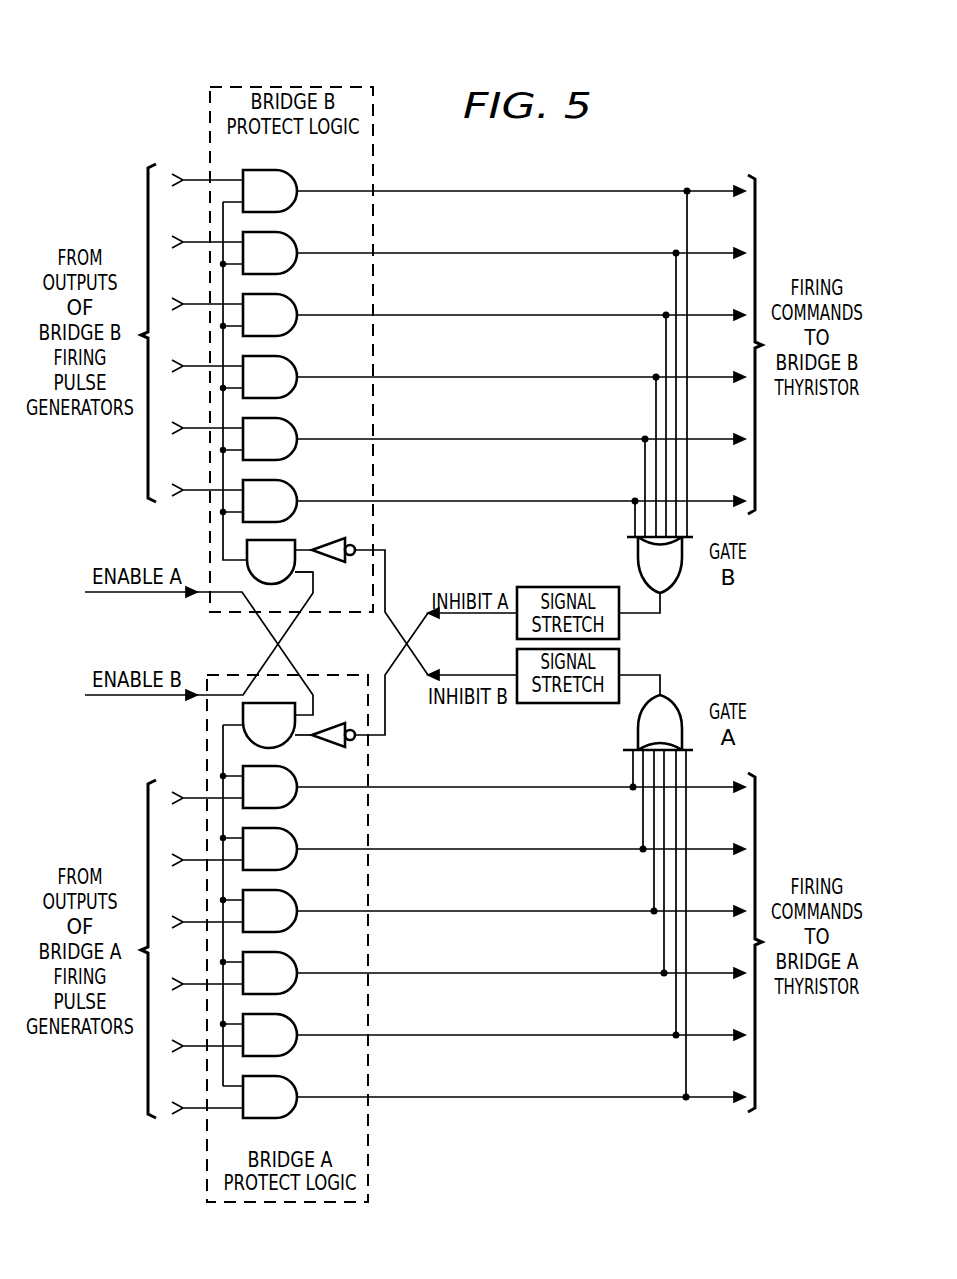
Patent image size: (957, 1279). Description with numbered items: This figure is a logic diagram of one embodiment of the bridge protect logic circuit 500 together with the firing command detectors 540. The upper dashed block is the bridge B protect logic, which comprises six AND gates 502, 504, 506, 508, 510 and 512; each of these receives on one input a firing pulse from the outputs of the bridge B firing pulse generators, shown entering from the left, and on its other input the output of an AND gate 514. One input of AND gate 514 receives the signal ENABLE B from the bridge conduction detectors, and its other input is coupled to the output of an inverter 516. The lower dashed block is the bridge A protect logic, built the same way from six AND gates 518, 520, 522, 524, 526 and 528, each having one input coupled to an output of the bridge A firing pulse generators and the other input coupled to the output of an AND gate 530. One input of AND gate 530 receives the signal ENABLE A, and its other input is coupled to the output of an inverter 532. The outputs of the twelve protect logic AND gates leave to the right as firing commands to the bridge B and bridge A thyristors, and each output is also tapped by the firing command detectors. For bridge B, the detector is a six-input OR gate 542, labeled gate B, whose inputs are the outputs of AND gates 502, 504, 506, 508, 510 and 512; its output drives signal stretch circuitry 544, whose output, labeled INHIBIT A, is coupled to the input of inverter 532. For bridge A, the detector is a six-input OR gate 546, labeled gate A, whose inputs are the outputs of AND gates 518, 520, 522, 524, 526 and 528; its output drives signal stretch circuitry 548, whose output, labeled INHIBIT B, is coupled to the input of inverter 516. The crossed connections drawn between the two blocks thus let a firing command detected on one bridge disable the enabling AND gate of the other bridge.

The bridge protect logic circuit 500 is at (165, 65).
The AND gate 502 is at (298, 177).
The AND gate 504 is at (298, 239).
The AND gate 506 is at (298, 301).
The AND gate 508 is at (298, 363).
The AND gate 510 is at (298, 425).
The AND gate 512 is at (298, 487).
The AND gate 514 is at (292, 548).
The inverter 516 is at (347, 542).
The AND gate 518 is at (298, 1110).
The AND gate 520 is at (298, 1048).
The AND gate 522 is at (298, 986).
The AND gate 524 is at (298, 924).
The AND gate 526 is at (298, 862).
The AND gate 528 is at (298, 800).
The AND gate 530 is at (297, 748).
The inverter 532 is at (347, 744).
The firing command detectors 540 is at (778, 652).
The six-input OR gate 542 is at (668, 590).
The signal stretch circuitry 544 is at (560, 587).
The six-input OR gate 546 is at (672, 698).
The signal stretch circuitry 548 is at (565, 703).